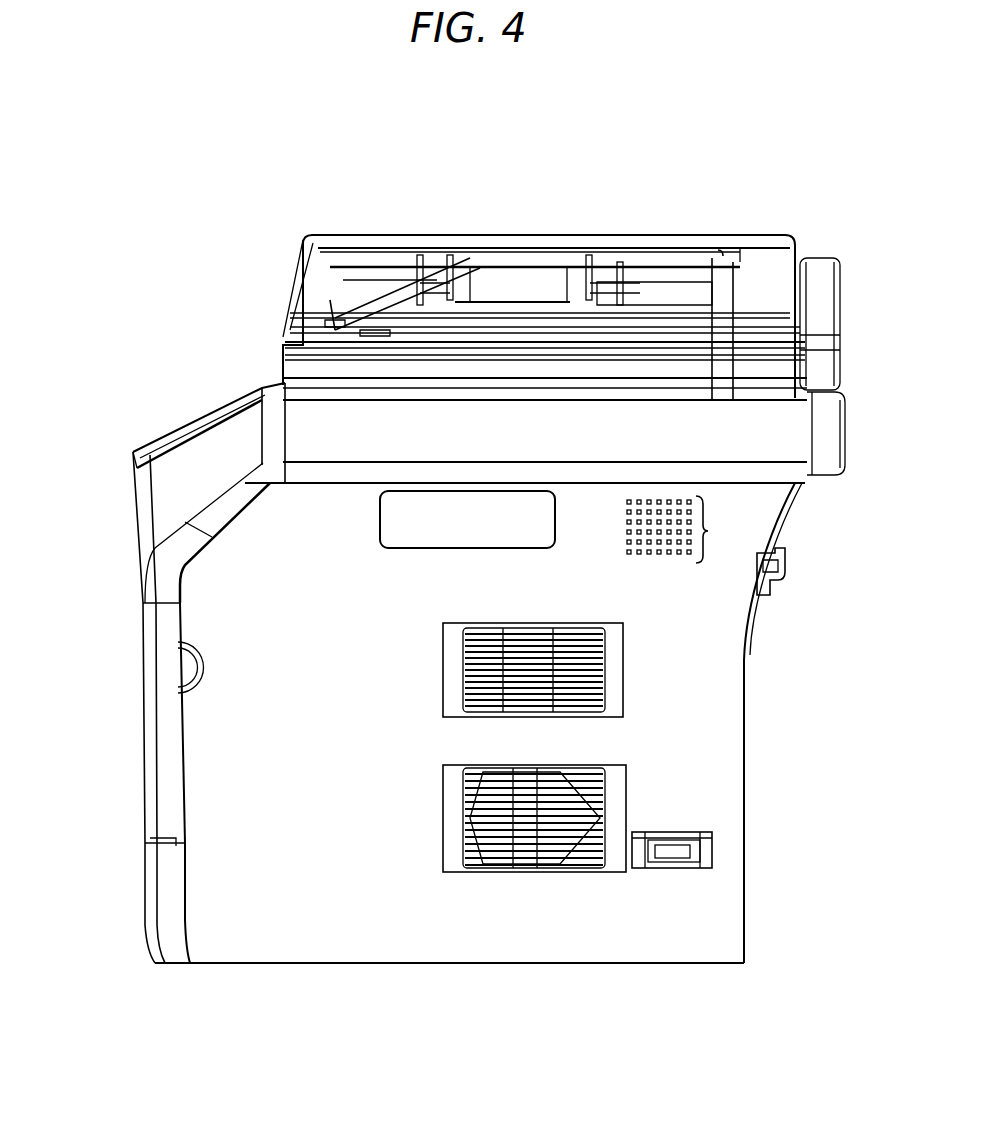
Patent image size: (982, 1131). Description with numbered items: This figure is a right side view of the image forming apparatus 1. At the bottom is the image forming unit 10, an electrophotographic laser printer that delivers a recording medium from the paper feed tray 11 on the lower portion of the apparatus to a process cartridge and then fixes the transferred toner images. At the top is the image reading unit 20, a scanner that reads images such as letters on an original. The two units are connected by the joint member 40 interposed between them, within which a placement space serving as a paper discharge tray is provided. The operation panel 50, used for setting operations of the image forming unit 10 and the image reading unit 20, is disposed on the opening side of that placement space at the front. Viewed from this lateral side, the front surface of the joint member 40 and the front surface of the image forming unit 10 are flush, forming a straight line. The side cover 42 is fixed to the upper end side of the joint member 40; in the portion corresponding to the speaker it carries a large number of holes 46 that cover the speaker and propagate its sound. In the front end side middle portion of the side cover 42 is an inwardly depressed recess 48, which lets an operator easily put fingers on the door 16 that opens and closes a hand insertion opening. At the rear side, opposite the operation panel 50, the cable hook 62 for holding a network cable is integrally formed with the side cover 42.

The image forming apparatus 1 is at (626, 154).
The image forming unit 10 is at (712, 800).
The paper feed tray 11 is at (160, 893).
The door 16 is at (162, 791).
The image reading unit 20 is at (521, 225).
The joint member 40 is at (172, 499).
The side cover 42 is at (718, 733).
The holes 46 is at (706, 530).
The recess 48 is at (535, 522).
The operation panel 50 is at (206, 410).
The cable hook 62 is at (785, 583).